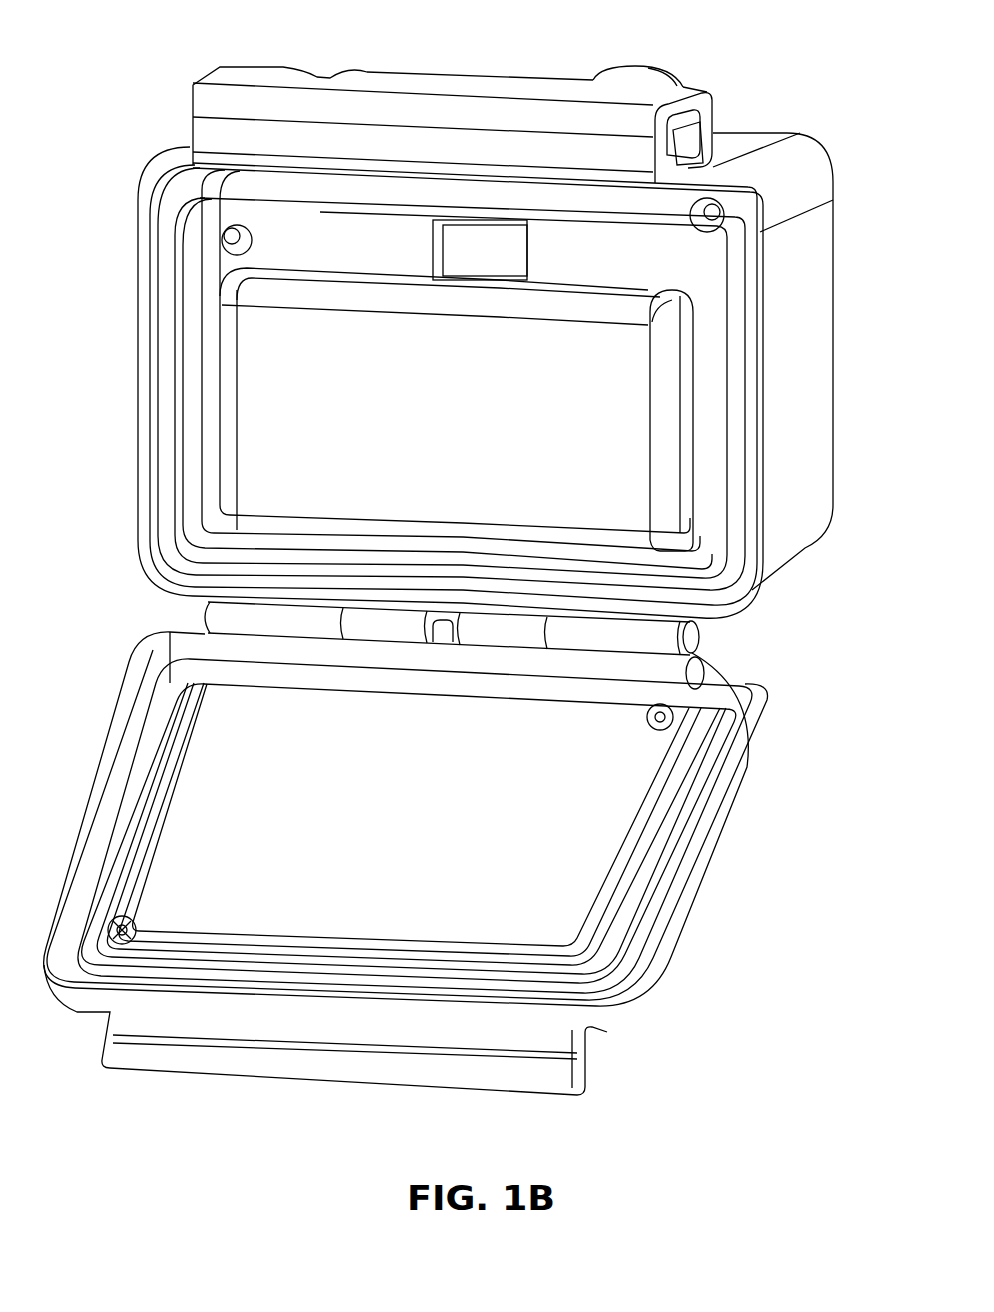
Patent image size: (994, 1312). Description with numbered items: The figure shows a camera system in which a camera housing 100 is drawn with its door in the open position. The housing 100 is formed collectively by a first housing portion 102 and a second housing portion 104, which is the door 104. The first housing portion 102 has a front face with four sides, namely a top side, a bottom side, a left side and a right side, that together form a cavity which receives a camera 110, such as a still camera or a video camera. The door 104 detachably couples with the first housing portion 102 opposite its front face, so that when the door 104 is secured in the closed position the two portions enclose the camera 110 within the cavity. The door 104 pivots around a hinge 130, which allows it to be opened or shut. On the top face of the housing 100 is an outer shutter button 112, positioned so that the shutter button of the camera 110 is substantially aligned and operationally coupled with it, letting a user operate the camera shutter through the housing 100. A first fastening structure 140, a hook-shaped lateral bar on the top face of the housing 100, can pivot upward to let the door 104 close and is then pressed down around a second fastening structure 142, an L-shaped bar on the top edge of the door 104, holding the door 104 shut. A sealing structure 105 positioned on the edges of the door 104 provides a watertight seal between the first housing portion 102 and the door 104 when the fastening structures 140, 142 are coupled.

The housing 100 is at (193, 50).
The first housing portion 102 is at (776, 168).
The second housing portion 104 is at (714, 847).
The sealing structure 105 is at (640, 927).
The camera 110 is at (293, 338).
The outer shutter button 112 is at (647, 60).
The hinge 130 is at (640, 632).
The first fastening structure 140 is at (486, 110).
The second fastening structure 142 is at (507, 1071).